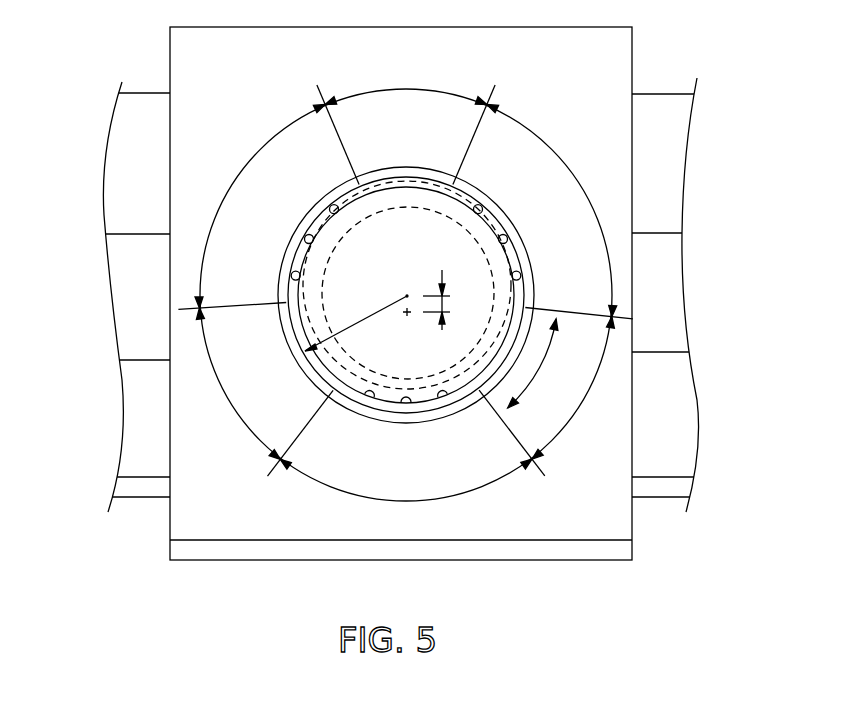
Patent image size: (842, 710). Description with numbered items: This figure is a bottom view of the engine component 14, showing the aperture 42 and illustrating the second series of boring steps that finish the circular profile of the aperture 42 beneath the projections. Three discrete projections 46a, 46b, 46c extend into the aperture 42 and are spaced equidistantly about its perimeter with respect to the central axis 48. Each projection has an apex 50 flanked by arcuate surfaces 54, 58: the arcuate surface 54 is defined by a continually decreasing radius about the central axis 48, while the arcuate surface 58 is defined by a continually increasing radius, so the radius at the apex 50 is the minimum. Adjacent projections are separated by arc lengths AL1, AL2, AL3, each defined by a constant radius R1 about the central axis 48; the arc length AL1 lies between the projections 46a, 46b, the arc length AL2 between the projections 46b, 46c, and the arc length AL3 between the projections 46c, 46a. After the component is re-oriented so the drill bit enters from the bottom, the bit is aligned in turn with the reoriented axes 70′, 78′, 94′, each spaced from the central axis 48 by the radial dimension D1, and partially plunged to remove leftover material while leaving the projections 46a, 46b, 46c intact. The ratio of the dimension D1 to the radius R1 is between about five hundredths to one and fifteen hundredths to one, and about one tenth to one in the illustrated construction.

The engine component 14 is at (706, 113).
The aperture 42 is at (317, 372).
The projection 46a is at (571, 166).
The projection 46b is at (233, 192).
The projection 46c is at (405, 503).
The central axis 48 is at (404, 296).
The apex 50 is at (305, 240).
The arcuate surface 54 is at (330, 208).
The arcuate surface 58 is at (292, 274).
The reoriented axis 70′ is at (422, 291).
The reoriented axis 78′ is at (392, 291).
The reoriented axis 94′ is at (410, 314).
The dimension D1 is at (447, 272).
The constant radius R1 is at (370, 317).
The arc length AL1 is at (415, 88).
The arc length AL2 is at (226, 399).
The arc length AL3 is at (540, 366).